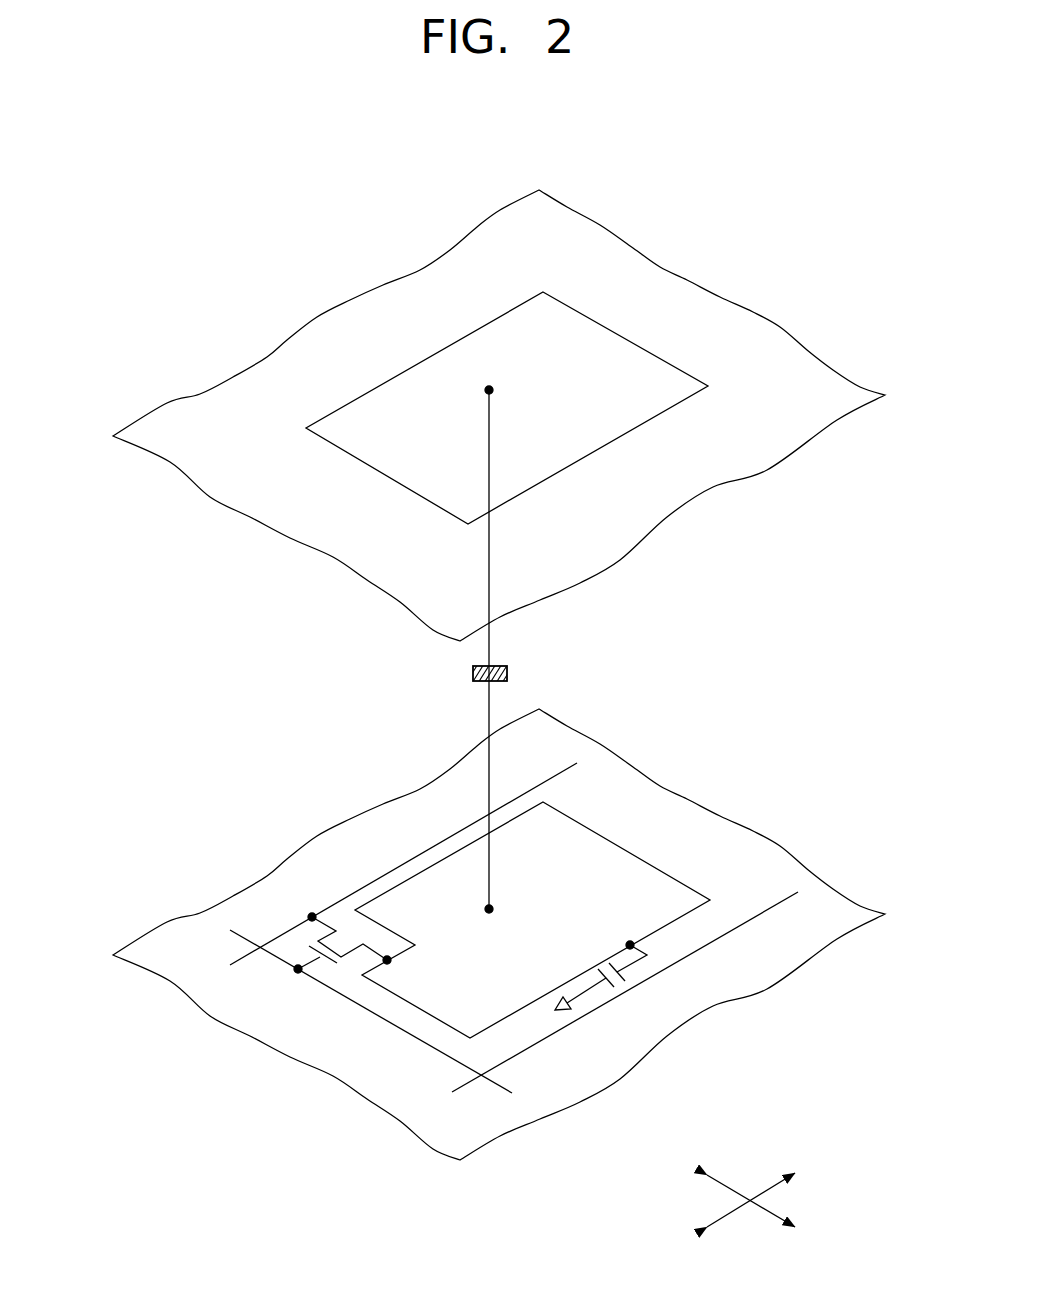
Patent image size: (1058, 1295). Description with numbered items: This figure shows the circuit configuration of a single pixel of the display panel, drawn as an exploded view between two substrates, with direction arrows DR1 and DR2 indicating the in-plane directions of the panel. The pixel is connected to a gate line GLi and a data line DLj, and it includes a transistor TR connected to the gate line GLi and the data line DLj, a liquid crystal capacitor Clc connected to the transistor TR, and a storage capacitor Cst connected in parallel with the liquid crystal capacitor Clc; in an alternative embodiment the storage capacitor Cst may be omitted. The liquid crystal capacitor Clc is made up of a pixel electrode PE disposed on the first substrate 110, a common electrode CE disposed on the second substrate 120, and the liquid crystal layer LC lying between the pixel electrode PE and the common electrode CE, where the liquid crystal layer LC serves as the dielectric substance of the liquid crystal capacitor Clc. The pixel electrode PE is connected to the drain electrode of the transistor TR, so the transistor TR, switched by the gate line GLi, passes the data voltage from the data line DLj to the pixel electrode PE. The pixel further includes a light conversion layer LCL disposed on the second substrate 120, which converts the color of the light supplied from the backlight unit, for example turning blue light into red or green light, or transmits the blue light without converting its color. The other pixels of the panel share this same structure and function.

The common electrode CE is at (499, 415).
The second substrate 120 is at (578, 583).
The light conversion layer LCL is at (597, 452).
The liquid crystal layer LC is at (605, 649).
The liquid crystal capacitor Clc is at (505, 675).
The first substrate 110 is at (663, 1042).
The pixel electrode PE is at (612, 838).
The gate line GLi is at (350, 1007).
The data line DLj is at (381, 871).
The transistor TR is at (327, 974).
The storage capacitor Cst is at (632, 979).
The first direction DR1 is at (774, 1196).
The second direction DR2 is at (774, 1206).